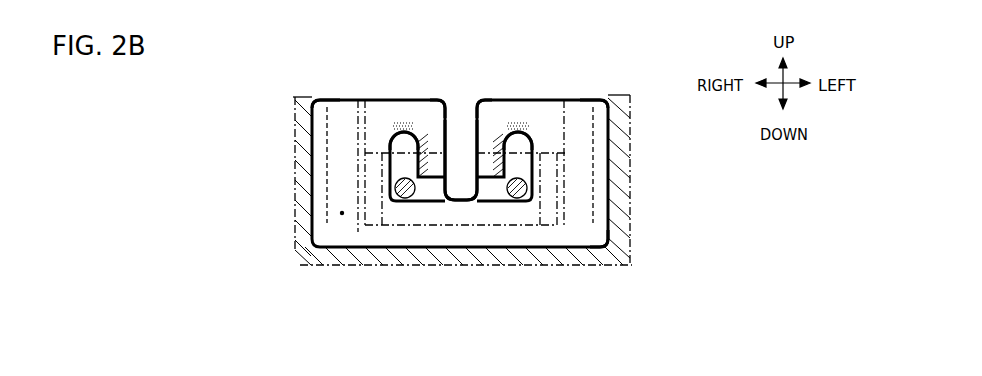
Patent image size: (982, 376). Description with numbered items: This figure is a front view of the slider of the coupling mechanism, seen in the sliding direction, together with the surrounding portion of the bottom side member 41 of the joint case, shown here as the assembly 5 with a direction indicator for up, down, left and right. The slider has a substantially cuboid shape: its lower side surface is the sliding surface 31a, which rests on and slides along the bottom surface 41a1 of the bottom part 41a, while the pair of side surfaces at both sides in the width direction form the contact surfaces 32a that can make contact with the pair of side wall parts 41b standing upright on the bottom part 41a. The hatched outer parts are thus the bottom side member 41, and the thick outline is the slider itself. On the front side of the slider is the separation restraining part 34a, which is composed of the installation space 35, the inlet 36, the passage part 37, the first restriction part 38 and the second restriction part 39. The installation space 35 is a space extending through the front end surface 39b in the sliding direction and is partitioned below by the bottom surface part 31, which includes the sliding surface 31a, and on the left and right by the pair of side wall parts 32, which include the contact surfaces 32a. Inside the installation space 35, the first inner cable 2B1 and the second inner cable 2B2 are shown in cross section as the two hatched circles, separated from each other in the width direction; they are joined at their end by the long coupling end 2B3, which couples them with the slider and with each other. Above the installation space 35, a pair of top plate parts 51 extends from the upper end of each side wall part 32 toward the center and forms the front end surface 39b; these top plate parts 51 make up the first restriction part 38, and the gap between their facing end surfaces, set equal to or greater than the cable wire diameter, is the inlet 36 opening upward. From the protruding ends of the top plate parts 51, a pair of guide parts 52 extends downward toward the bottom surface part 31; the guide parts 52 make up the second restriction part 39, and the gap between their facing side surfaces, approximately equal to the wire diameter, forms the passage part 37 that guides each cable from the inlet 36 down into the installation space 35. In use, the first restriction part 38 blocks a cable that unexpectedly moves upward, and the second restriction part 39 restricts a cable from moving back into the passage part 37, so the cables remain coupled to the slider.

The connector 5 is at (575, 24).
The bottom surface part 31 is at (398, 266).
The sliding surface 31a is at (562, 250).
The side wall part 32 is at (296, 121).
The contact surface 32a is at (310, 198).
The separation restraining part 34a is at (545, 73).
The installation space 35 is at (524, 174).
The inlet 36 is at (443, 99).
The passage part 37 is at (461, 98).
The first restriction part 38 is at (397, 122).
The second restriction part 39 is at (390, 133).
The front end surface 39b is at (340, 214).
The bottom side member 41 is at (288, 116).
The bottom part 41a is at (330, 266).
The bottom surface 41a1 is at (345, 266).
The side wall part 41b is at (283, 150).
The top plate part 51 is at (409, 99).
The guide part 52 is at (491, 181).
The first inner cable 2B1 is at (375, 266).
The second inner cable 2B2 is at (540, 265).
The coupling end 2B3 is at (632, 243).